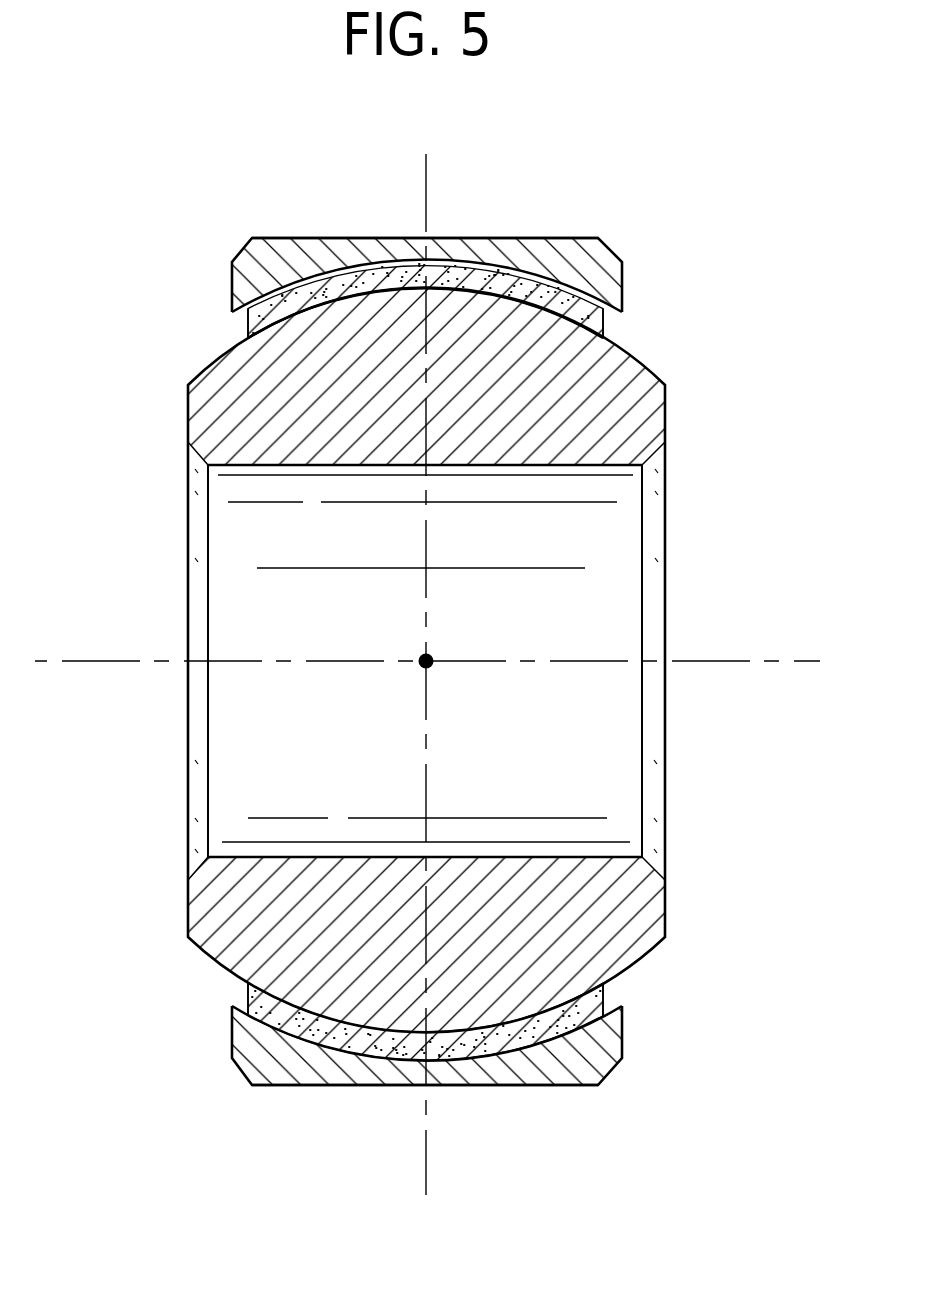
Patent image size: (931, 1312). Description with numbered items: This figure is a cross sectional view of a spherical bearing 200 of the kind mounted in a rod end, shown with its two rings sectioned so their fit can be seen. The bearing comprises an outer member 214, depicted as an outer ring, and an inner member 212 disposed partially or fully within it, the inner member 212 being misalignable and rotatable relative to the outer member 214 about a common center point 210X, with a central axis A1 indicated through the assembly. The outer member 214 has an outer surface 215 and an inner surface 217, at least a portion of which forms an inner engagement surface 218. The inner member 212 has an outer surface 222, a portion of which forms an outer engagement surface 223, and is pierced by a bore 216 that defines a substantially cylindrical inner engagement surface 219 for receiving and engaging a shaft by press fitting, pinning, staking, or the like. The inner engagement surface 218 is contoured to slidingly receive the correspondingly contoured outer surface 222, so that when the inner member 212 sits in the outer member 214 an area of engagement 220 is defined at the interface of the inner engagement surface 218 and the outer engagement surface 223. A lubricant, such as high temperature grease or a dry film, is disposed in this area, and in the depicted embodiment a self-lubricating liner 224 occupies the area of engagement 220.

The spherical bearing 200 is at (595, 149).
The inner member 212 is at (205, 410).
The outer member 214 is at (288, 247).
The outer surface 215 is at (365, 237).
The bore 216 is at (608, 567).
The inner surface 217 is at (224, 330).
The inner engagement surface 218 is at (510, 282).
The inner engagement surface 219 is at (600, 538).
The area of engagement 220 is at (618, 328).
The outer surface 222 is at (220, 373).
The outer engagement surface 223 is at (258, 338).
The self-lubricating liner 224 is at (547, 290).
The common center point 210X is at (428, 668).
The central axis A1 is at (128, 662).